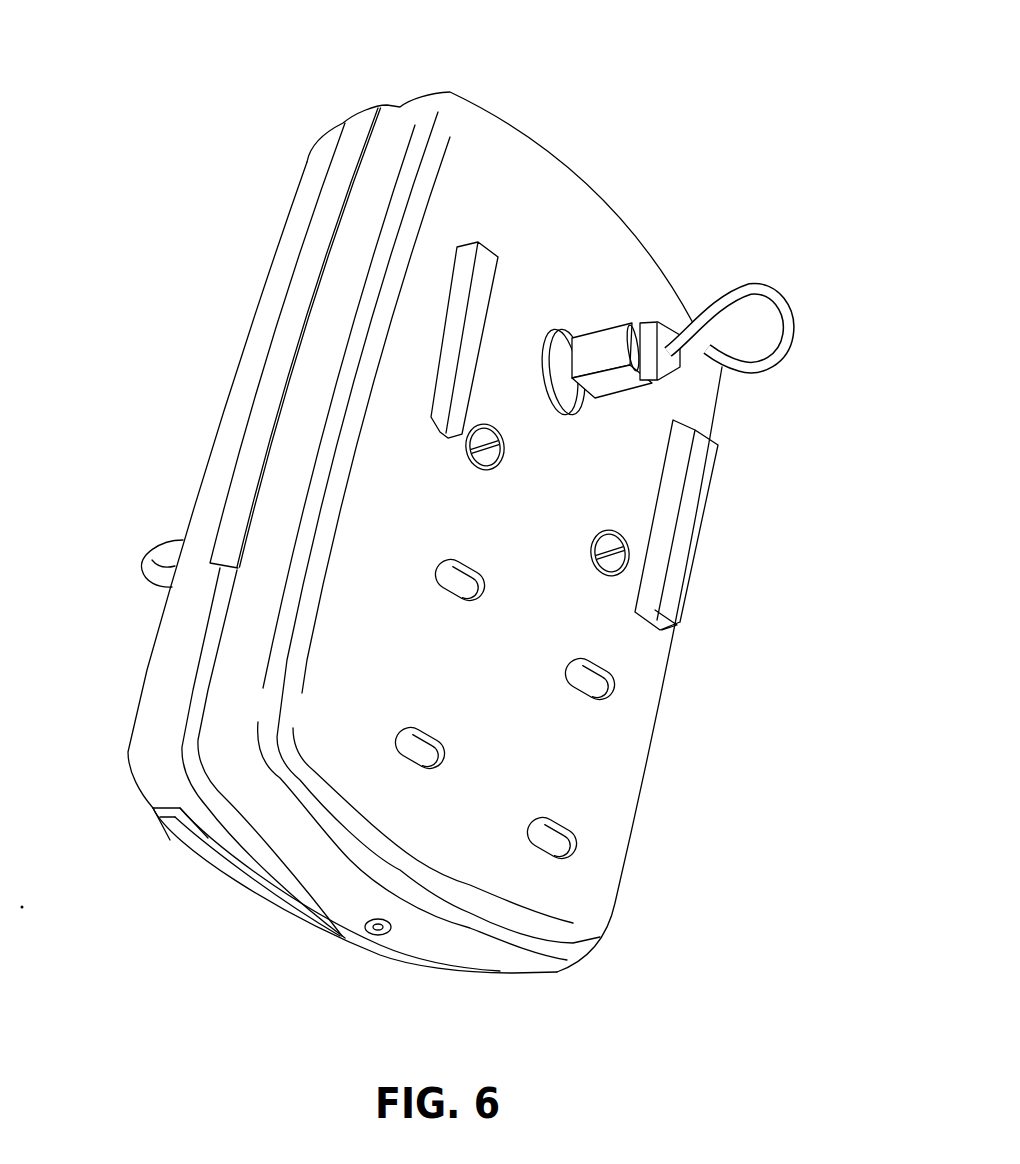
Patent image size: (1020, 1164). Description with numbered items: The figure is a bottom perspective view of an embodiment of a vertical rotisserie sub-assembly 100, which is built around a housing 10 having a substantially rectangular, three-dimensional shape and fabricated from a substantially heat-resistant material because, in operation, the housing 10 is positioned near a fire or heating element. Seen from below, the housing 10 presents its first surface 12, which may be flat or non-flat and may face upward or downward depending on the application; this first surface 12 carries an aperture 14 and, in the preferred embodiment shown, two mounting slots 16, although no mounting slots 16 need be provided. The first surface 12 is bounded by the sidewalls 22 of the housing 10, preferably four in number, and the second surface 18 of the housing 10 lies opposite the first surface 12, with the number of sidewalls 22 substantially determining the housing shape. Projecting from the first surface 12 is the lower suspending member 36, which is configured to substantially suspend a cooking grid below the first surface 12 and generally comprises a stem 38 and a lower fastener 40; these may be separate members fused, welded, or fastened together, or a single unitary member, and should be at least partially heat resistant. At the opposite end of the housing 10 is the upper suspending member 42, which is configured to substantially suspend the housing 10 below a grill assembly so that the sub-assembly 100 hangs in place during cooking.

The vertical rotisserie sub-assembly 100 is at (449, 502).
The housing 10 is at (410, 532).
The first surface 12 is at (657, 667).
The aperture 14 is at (678, 418).
The mounting slot 16 is at (490, 250).
The second surface 18 is at (250, 327).
The sidewall 22 is at (287, 242).
The lower suspending member 36 is at (773, 295).
The stem 38 is at (617, 388).
The lower fastener 40 is at (792, 337).
The upper suspending member 42 is at (141, 557).